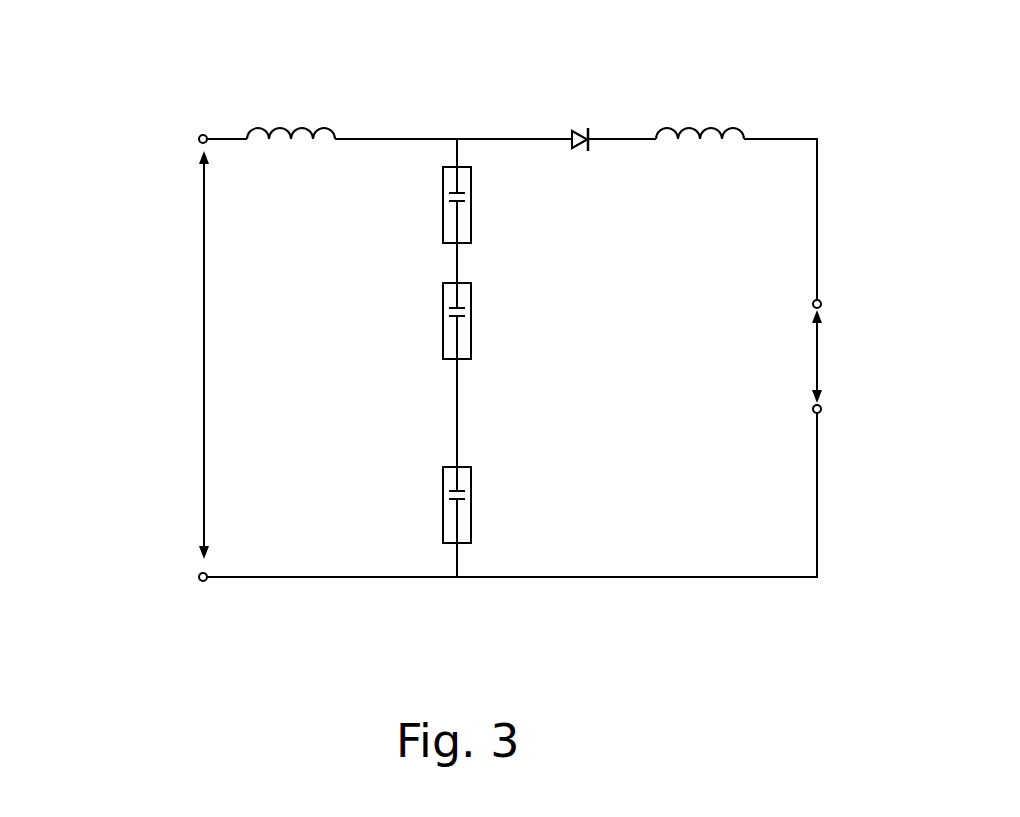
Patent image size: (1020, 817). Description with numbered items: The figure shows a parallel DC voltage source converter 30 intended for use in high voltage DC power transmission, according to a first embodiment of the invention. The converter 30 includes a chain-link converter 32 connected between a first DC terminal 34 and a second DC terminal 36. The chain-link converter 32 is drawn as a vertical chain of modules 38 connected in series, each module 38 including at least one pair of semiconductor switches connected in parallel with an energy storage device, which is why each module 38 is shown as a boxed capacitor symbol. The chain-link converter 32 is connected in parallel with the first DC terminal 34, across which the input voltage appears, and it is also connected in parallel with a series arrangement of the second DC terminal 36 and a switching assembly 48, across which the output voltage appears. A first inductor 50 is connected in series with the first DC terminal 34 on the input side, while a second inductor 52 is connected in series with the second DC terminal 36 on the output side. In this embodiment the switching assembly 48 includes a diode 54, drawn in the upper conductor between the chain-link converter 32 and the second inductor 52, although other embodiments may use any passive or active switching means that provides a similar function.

The DC voltage source converter 30 is at (100, 152).
The chain-link converter 32 is at (437, 320).
The first DC terminal 34 is at (172, 346).
The second DC terminal 36 is at (852, 350).
The module 38 is at (471, 214).
The switching assembly 48 is at (587, 117).
The first inductor 50 is at (295, 127).
The second inductor 52 is at (705, 127).
The diode 54 is at (577, 149).